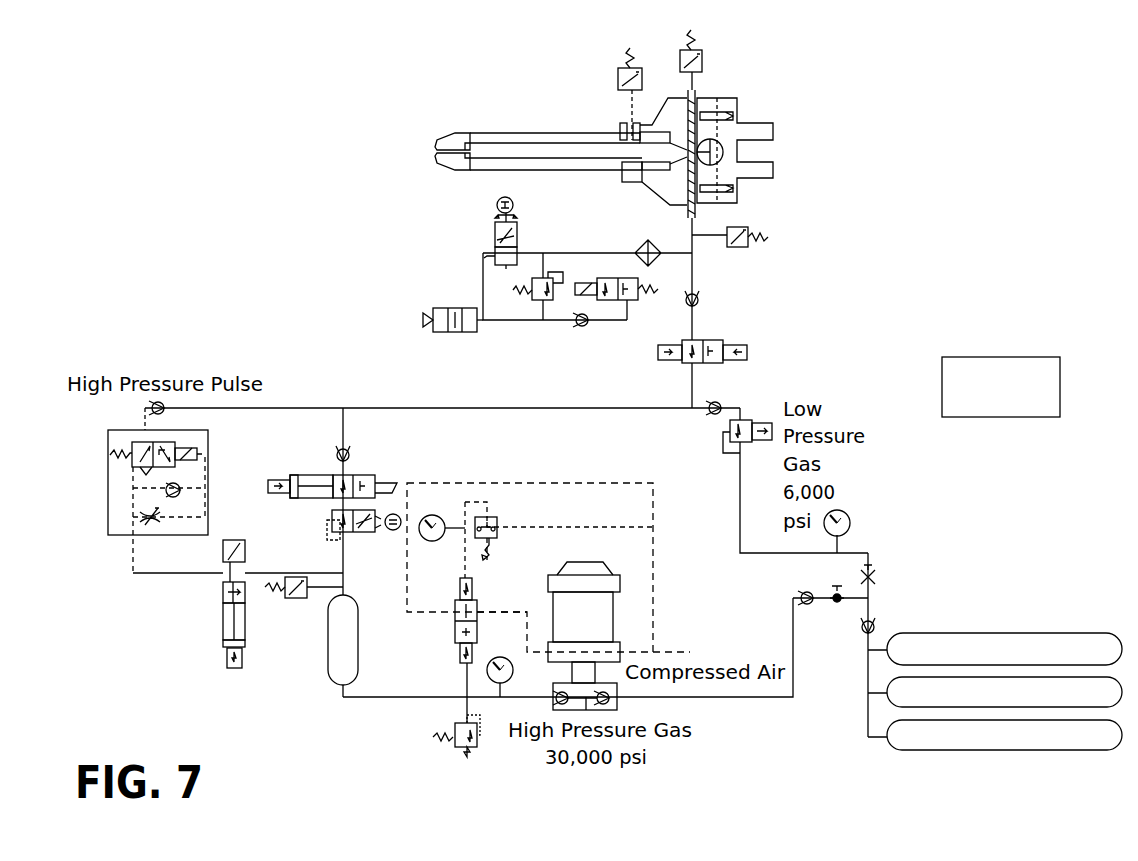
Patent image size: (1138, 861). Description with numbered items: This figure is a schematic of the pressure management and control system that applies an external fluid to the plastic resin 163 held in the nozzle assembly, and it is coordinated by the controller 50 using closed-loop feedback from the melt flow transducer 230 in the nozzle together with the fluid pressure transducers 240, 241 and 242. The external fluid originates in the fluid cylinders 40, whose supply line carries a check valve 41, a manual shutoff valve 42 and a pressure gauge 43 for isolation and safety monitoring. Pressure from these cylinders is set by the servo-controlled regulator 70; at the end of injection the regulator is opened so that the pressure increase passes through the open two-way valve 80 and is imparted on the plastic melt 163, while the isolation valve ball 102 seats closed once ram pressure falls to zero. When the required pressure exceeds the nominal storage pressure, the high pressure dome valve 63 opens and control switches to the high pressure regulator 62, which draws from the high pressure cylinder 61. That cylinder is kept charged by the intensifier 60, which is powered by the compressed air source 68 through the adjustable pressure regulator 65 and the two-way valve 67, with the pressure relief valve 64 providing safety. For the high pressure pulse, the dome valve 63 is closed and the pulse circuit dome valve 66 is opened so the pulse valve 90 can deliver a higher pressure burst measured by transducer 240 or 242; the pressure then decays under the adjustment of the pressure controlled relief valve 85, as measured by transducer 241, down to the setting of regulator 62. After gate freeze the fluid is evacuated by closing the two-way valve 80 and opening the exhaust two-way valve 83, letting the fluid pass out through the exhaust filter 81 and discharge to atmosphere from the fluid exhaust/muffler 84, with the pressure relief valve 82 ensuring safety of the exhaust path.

The plastic resin 163 is at (563, 150).
The isolation valve ball 102 is at (720, 153).
The melt flow transducer 230 is at (618, 78).
The fluid pressure transducer 240 is at (702, 63).
The fluid pressure transducer 242 is at (745, 232).
The pressure controlled relief valve 85 is at (497, 250).
The fluid exhaust/muffler 84 is at (452, 318).
The pressure relief valve 82 is at (543, 285).
The exhaust filter 81 is at (648, 250).
The exhaust two-way valve 83 is at (636, 295).
The two-way valve 80 is at (700, 347).
The servo-controlled regulator 70 is at (747, 422).
The controller 50 is at (1010, 372).
The pulse valve 90 is at (125, 490).
The high pressure dome valve 63 is at (317, 493).
The high pressure regulator 62 is at (337, 528).
The pulse circuit dome valve 66 is at (228, 610).
The fluid pressure transducer 241 is at (292, 593).
The high pressure cylinder 61 is at (337, 667).
The adjustable pressure regulator 65 is at (497, 525).
The two-way valve 67 is at (462, 618).
The intensifier 60 is at (598, 618).
The compressed air source 68 is at (675, 652).
The pressure relief valve 64 is at (462, 737).
The pressure gauge 43 is at (843, 515).
The manual shutoff valve 42 is at (870, 573).
The check valve 41 is at (868, 617).
The fluid cylinders 40 is at (913, 650).